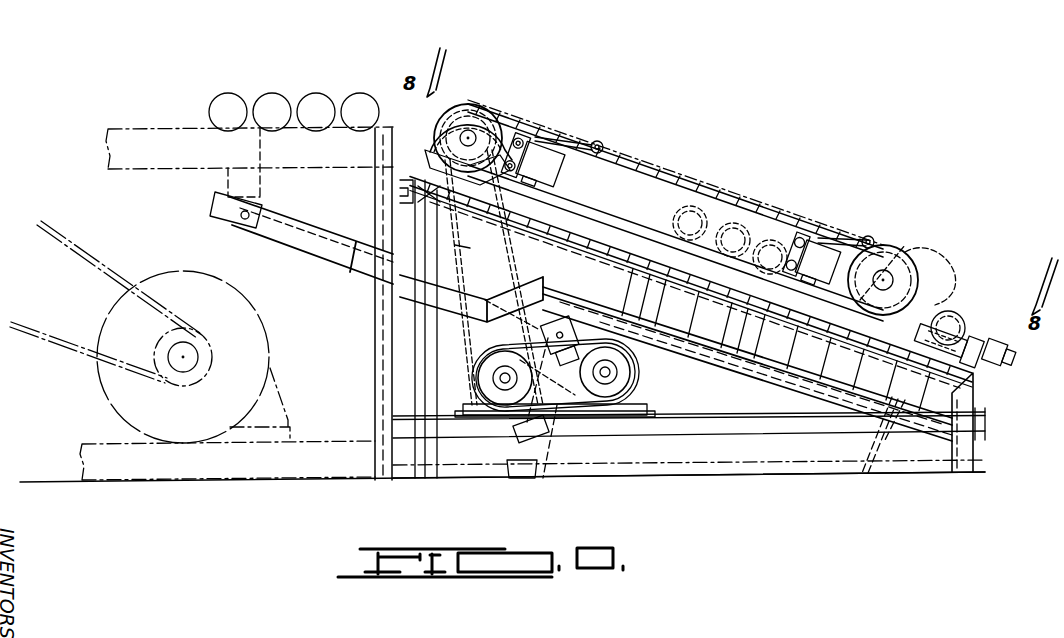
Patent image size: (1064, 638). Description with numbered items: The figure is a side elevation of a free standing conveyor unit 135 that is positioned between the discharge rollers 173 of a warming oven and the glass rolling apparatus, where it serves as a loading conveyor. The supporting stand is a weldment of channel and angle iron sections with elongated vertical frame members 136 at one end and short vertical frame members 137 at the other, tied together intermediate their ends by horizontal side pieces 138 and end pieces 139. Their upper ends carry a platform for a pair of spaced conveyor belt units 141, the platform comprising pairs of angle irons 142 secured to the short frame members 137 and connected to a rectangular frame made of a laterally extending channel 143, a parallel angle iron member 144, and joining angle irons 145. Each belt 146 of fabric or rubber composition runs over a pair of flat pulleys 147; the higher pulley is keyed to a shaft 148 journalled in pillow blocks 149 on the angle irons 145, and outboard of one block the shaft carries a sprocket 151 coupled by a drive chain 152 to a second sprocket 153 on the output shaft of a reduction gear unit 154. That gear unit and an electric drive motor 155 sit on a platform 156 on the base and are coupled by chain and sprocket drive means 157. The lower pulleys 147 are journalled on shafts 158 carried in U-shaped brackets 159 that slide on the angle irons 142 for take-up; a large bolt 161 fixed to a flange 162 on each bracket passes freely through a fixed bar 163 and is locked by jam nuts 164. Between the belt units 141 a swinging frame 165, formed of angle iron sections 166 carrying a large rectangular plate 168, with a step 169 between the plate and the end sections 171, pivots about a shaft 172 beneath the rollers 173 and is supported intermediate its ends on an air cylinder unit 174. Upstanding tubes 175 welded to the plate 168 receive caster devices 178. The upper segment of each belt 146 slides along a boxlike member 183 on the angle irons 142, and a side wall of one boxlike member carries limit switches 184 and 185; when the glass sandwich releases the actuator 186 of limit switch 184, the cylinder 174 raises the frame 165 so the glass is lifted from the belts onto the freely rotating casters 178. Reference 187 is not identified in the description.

The conveyor unit 135 is at (794, 156).
The elongated vertical frame members 136 is at (265, 310).
The short vertical frame members 137 is at (985, 412).
The horizontal side pieces 138 is at (738, 425).
The end pieces 139 is at (272, 340).
The conveyor belt units 141 is at (688, 162).
The angle irons 142 is at (558, 272).
The channel 143 is at (405, 185).
The angle iron member 144 is at (495, 235).
The angle irons 145 is at (418, 194).
The belt 146 is at (490, 110).
The flat pulleys 147 is at (462, 104).
The shaft 148 is at (452, 125).
The pillow blocks 149 is at (485, 125).
The sprocket 151 is at (468, 136).
The drive chain 152 is at (492, 320).
The second sprocket 153 is at (532, 330).
The reduction gear unit 154 is at (490, 375).
The electric drive motor 155 is at (635, 392).
The platform 156 is at (500, 415).
The chain and sprocket drive means 157 is at (598, 405).
The shafts 158 is at (925, 255).
The U-shaped bracket 159 is at (900, 280).
The bolt 161 is at (970, 332).
The flange 162 is at (905, 362).
The fixed bar 163 is at (995, 352).
The jam nuts 164 is at (975, 388).
The swinging frame 165 is at (776, 402).
The angle iron sections 166 is at (720, 370).
The rectangular plate 168 is at (684, 312).
The step 169 is at (530, 300).
The end sections 171 is at (312, 246).
The shaft 172 is at (244, 220).
The rollers 173 is at (227, 95).
The air cylinder unit 174 is at (550, 410).
The upstanding tubes 175 is at (743, 343).
The caster device 178 is at (705, 197).
The boxlike member 183 is at (622, 148).
The limit switch 184 is at (575, 178).
The limit switch 185 is at (812, 235).
The actuator 186 is at (598, 140).
The actuator rod 187 is at (872, 235).